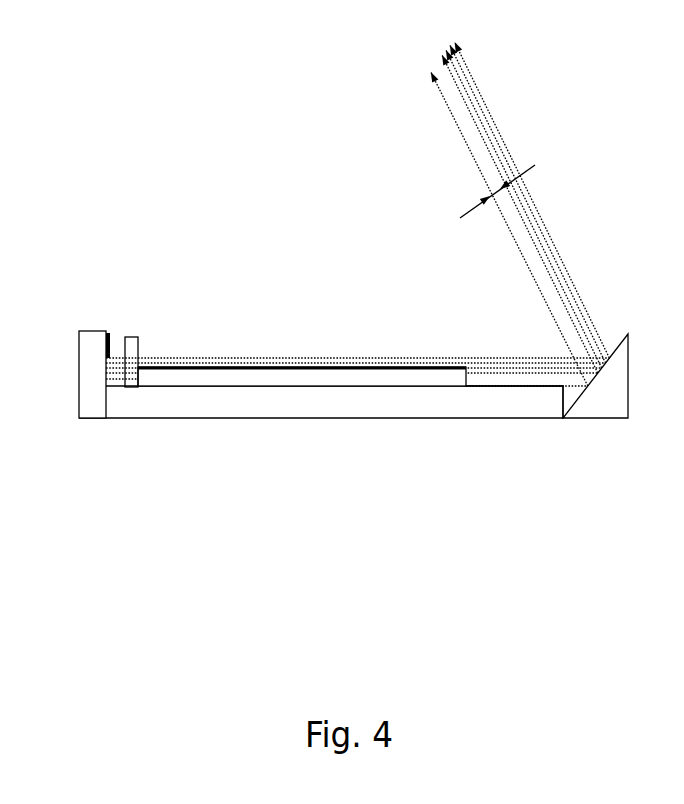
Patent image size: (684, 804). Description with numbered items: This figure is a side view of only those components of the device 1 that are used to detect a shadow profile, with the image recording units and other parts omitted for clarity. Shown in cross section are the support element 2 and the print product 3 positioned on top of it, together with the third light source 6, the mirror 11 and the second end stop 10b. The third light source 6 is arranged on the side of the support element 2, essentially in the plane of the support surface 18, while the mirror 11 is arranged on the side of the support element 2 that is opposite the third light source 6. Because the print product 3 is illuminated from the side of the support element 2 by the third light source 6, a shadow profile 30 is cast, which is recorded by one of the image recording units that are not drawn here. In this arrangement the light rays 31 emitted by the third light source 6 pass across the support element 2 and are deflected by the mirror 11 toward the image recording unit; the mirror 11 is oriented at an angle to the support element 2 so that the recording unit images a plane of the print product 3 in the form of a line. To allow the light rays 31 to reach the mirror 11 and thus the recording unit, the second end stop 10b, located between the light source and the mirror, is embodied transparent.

The device 1 is at (287, 248).
The support element 2 is at (153, 395).
The print product 3 is at (288, 378).
The third light source 6 is at (82, 363).
The second end stop 10b is at (135, 335).
The mirror 11 is at (605, 397).
The support surface 18 is at (497, 387).
The shadow profile 30 is at (488, 190).
The light rays 31 is at (543, 247).